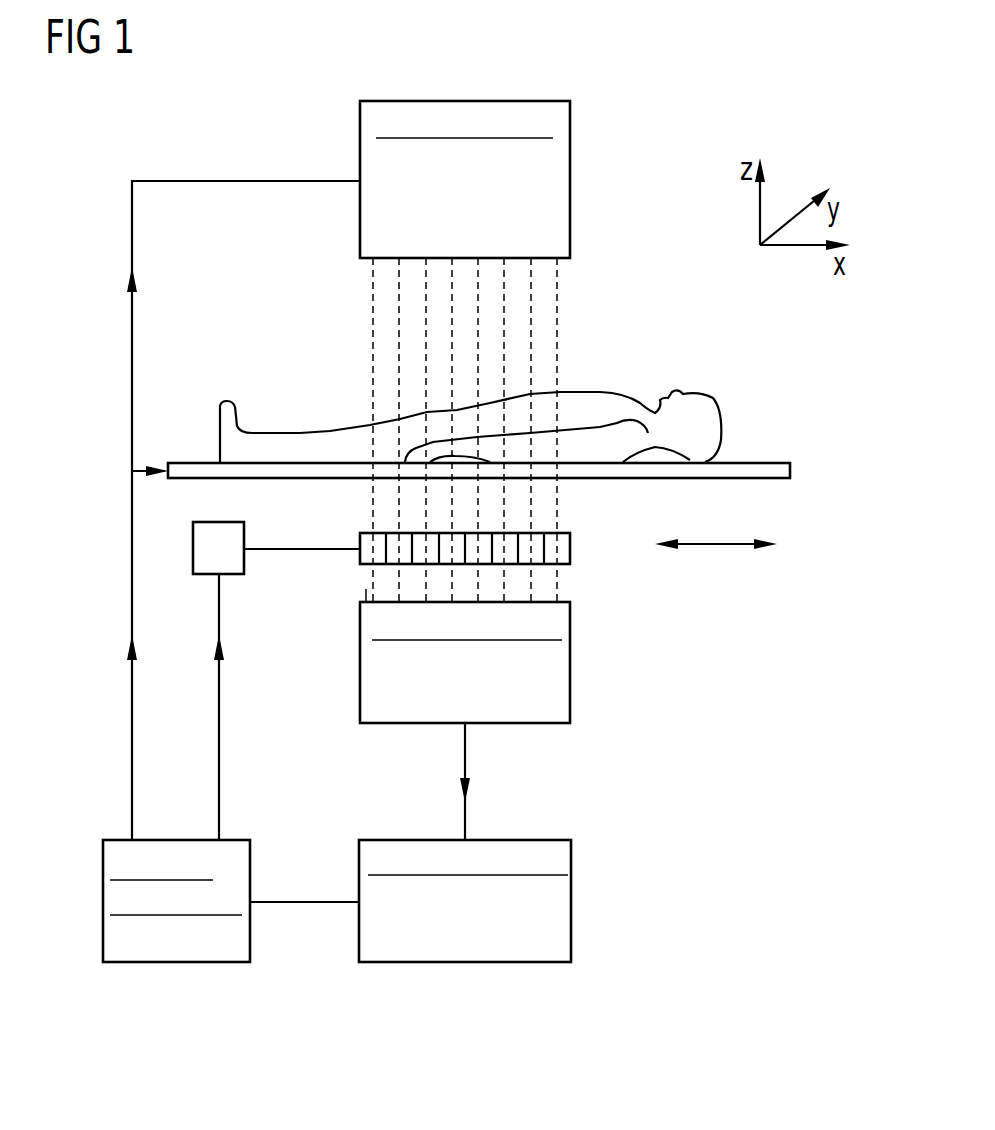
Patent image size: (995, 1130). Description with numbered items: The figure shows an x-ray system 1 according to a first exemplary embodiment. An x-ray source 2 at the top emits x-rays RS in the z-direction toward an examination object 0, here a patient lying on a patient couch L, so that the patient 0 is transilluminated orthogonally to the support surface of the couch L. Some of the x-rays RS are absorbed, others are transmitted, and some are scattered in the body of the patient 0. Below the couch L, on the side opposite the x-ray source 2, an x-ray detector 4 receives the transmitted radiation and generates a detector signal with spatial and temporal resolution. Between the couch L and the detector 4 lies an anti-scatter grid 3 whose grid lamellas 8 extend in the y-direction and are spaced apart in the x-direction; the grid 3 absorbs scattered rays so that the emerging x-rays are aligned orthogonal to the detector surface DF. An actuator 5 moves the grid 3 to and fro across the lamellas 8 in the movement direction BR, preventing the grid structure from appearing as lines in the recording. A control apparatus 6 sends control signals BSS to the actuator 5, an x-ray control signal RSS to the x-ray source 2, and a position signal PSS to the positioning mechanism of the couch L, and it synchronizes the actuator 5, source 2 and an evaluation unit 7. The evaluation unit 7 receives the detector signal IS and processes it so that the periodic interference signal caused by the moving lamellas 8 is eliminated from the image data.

The x-ray system 1 is at (695, 112).
The x-ray source 2 is at (570, 181).
The anti-scatter grid 3 is at (570, 548).
The x-ray detector 4 is at (570, 662).
The actuator 5 is at (193, 551).
The control apparatus 6 is at (103, 903).
The evaluation unit 7 is at (571, 903).
The grid lamellas 8 is at (383, 546).
The examination object 0 is at (608, 397).
The patient couch L is at (792, 467).
The x-rays RS is at (557, 292).
The detector surface DF is at (364, 598).
The detector signal IS is at (465, 759).
The x-ray control signal RSS is at (132, 345).
The position signal PSS is at (132, 752).
The control signals BSS is at (219, 748).
The movement direction BR is at (716, 564).